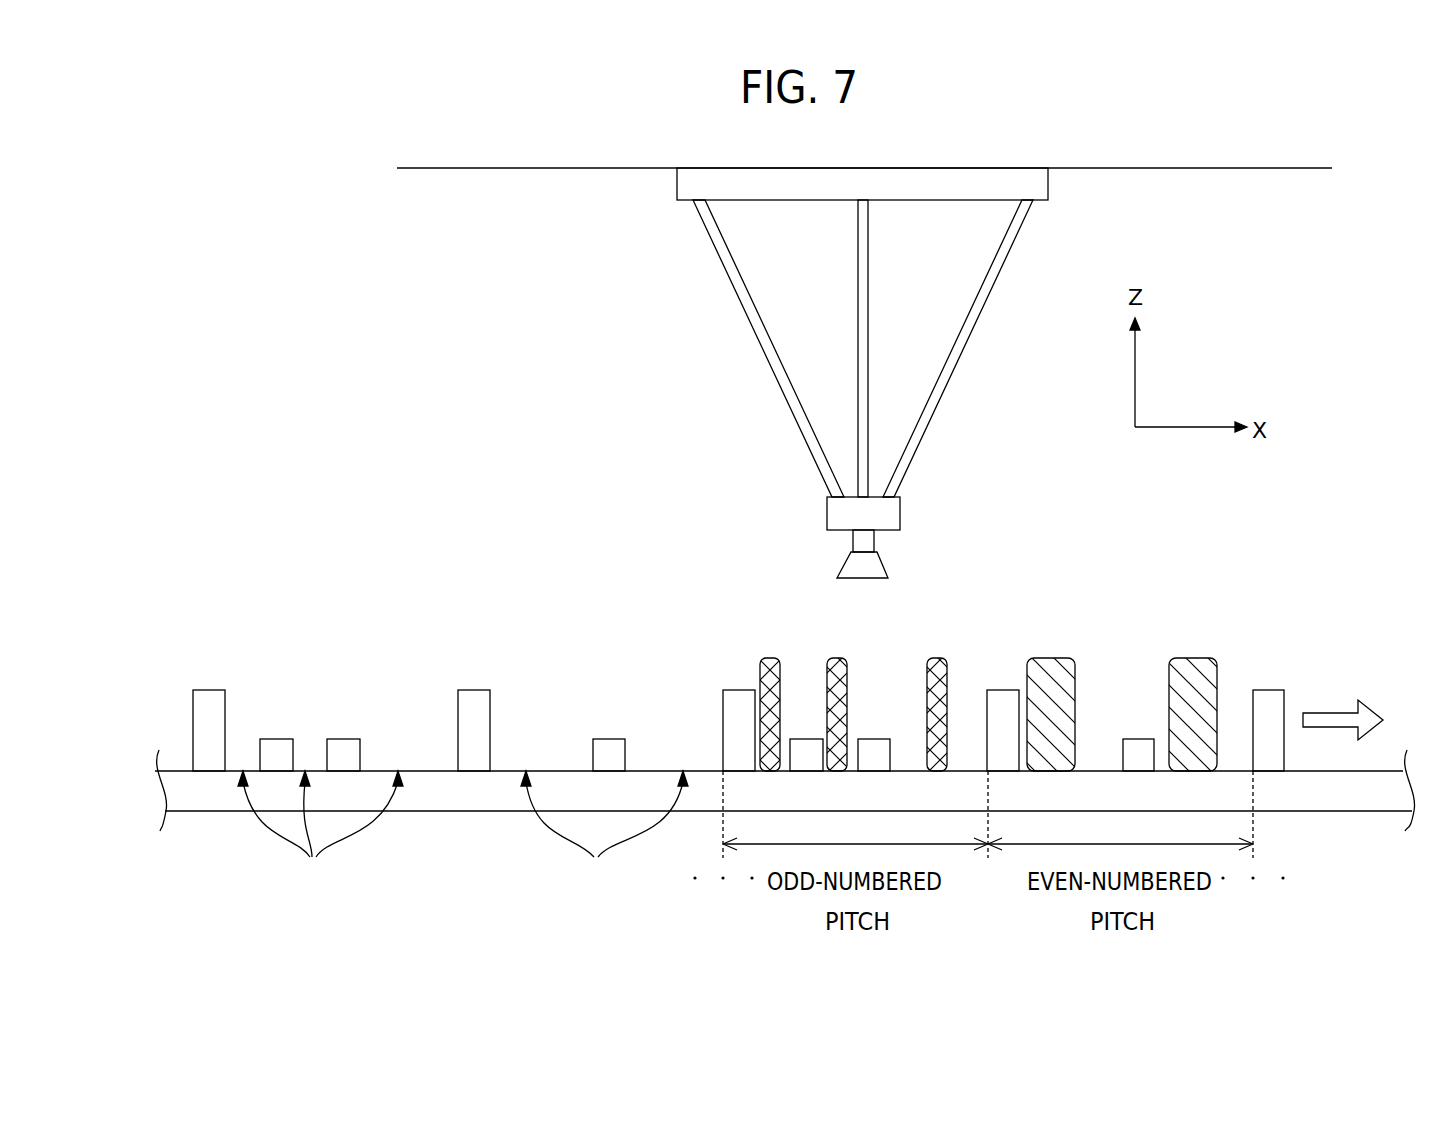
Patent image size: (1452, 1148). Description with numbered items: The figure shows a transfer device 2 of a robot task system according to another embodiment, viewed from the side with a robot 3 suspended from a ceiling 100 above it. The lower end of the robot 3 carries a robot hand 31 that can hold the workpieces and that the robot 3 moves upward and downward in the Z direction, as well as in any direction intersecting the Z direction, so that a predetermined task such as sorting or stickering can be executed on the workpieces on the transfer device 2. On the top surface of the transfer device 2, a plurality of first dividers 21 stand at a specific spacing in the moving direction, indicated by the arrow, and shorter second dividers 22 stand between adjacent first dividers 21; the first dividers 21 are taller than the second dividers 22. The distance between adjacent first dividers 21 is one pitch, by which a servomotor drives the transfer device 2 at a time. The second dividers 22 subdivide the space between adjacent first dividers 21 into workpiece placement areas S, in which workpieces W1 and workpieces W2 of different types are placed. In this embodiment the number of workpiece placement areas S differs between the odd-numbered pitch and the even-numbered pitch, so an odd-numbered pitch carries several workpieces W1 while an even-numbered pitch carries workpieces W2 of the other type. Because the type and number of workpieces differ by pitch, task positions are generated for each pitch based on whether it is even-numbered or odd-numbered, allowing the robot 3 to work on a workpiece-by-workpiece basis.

The ceiling 100 is at (1212, 168).
The robot 3 is at (740, 391).
The robot hand 31 is at (878, 562).
The transfer device 2 is at (1379, 771).
The first dividers 21 is at (209, 690).
The second dividers 22 is at (345, 739).
The workpiece W1 is at (770, 658).
The workpiece W2 is at (1050, 658).
The workpiece placement areas S is at (463, 833).